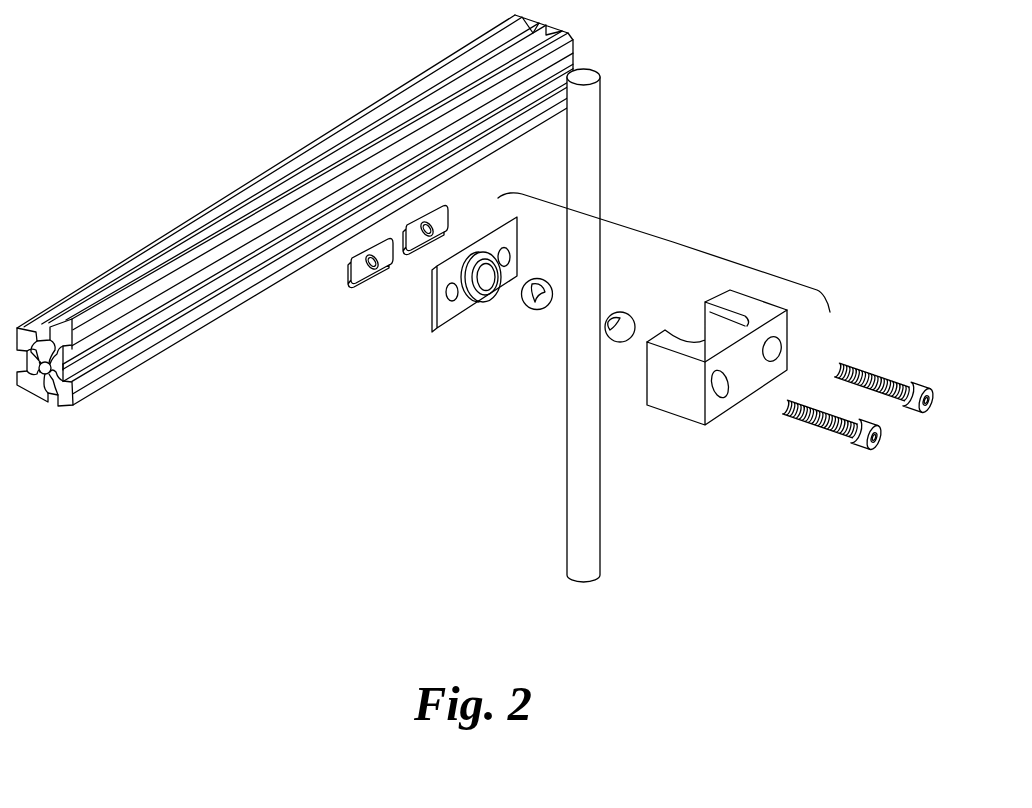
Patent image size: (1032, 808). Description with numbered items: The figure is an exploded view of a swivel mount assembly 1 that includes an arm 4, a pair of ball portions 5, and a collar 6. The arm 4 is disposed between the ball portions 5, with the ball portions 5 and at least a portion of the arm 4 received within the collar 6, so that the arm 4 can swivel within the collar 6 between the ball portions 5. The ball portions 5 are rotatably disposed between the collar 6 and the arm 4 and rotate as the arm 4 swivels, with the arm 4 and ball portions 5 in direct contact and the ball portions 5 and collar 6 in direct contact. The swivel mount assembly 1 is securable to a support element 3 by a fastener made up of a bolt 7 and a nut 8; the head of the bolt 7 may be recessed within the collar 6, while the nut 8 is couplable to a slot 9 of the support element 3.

The swivel mount assembly 1 is at (673, 242).
The support element 3 is at (208, 207).
The arm 4 is at (577, 482).
The ball portions 5 is at (533, 295).
The collar 6 is at (432, 317).
The bolt 7 is at (877, 378).
The nut 8 is at (448, 205).
The slot 9 is at (152, 330).